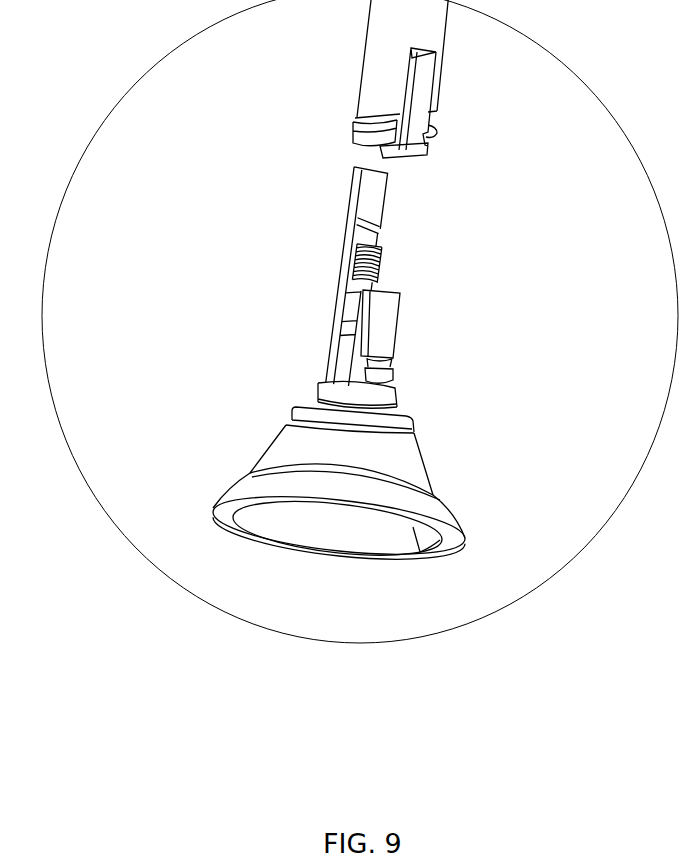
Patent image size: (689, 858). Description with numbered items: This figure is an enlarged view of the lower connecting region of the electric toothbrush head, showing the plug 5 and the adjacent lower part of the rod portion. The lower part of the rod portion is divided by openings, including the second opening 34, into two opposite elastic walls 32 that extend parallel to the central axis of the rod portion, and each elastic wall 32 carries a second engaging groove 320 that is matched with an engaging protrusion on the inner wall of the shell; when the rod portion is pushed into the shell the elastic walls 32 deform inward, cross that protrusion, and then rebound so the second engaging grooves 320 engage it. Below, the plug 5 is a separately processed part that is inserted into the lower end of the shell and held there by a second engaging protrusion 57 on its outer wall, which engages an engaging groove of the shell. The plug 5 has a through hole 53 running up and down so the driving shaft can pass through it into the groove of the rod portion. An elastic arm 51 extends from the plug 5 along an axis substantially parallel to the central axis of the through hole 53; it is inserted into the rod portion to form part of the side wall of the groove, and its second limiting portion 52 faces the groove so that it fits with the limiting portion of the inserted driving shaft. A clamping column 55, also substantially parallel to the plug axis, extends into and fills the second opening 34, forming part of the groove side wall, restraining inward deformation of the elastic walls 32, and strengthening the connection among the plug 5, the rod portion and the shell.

The elastic wall 32 is at (372, 87).
The second engaging groove 320 is at (365, 123).
The second opening 34 is at (423, 92).
The elastic arm 51 is at (348, 219).
The second limiting portion 52 is at (382, 259).
The clamping column 55 is at (388, 328).
The second engaging protrusion 57 is at (412, 427).
The plug 5 is at (413, 457).
The through hole 53 is at (367, 535).